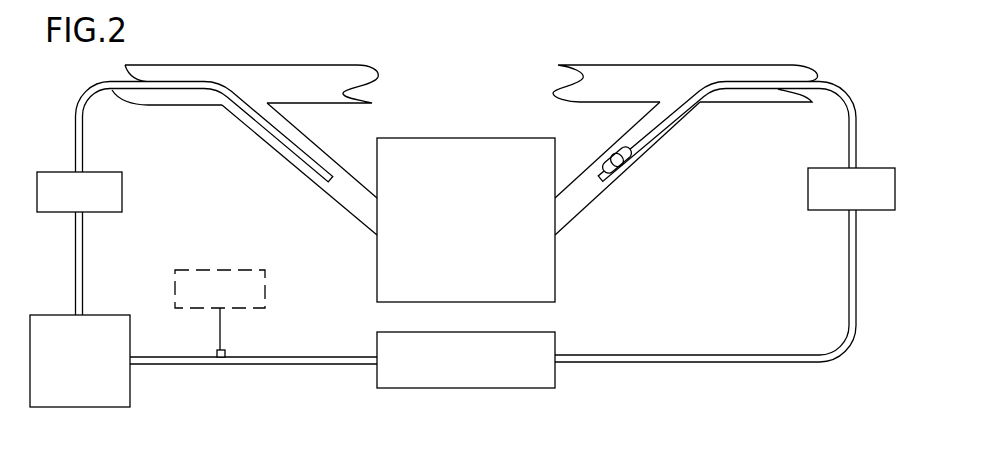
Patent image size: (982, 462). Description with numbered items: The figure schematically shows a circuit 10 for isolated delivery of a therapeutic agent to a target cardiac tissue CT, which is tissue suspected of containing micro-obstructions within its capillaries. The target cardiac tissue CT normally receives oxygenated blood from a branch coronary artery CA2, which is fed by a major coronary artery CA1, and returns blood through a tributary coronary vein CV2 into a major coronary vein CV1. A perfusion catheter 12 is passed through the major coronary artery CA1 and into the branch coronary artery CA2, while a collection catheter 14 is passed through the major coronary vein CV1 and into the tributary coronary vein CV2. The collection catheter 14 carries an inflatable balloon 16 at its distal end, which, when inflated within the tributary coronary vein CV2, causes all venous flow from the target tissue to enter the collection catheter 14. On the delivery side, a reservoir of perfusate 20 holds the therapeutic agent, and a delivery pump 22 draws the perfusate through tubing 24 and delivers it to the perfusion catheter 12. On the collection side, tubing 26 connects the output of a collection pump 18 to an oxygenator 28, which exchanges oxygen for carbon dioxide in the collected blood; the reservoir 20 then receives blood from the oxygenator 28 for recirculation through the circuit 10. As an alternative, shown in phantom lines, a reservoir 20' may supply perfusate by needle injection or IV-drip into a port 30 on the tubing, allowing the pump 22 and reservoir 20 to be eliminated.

The circuit 10 is at (316, 347).
The perfusion catheter 12 is at (123, 81).
The collection catheter 14 is at (740, 80).
The inflatable balloon 16 is at (634, 162).
The collection pump 18 is at (875, 168).
The reservoir of perfusate 20 is at (77, 337).
The reservoir 20' is at (220, 270).
The delivery pump 22 is at (123, 192).
The tubing 24 is at (85, 258).
The tubing 26 is at (857, 258).
The oxygenator 28 is at (557, 340).
The port 30 is at (217, 351).
The major coronary artery CA1 is at (237, 65).
The branch coronary artery CA2 is at (318, 184).
The major coronary vein CV1 is at (675, 65).
The tributary coronary vein CV2 is at (597, 197).
The target cardiac tissue CT is at (555, 273).